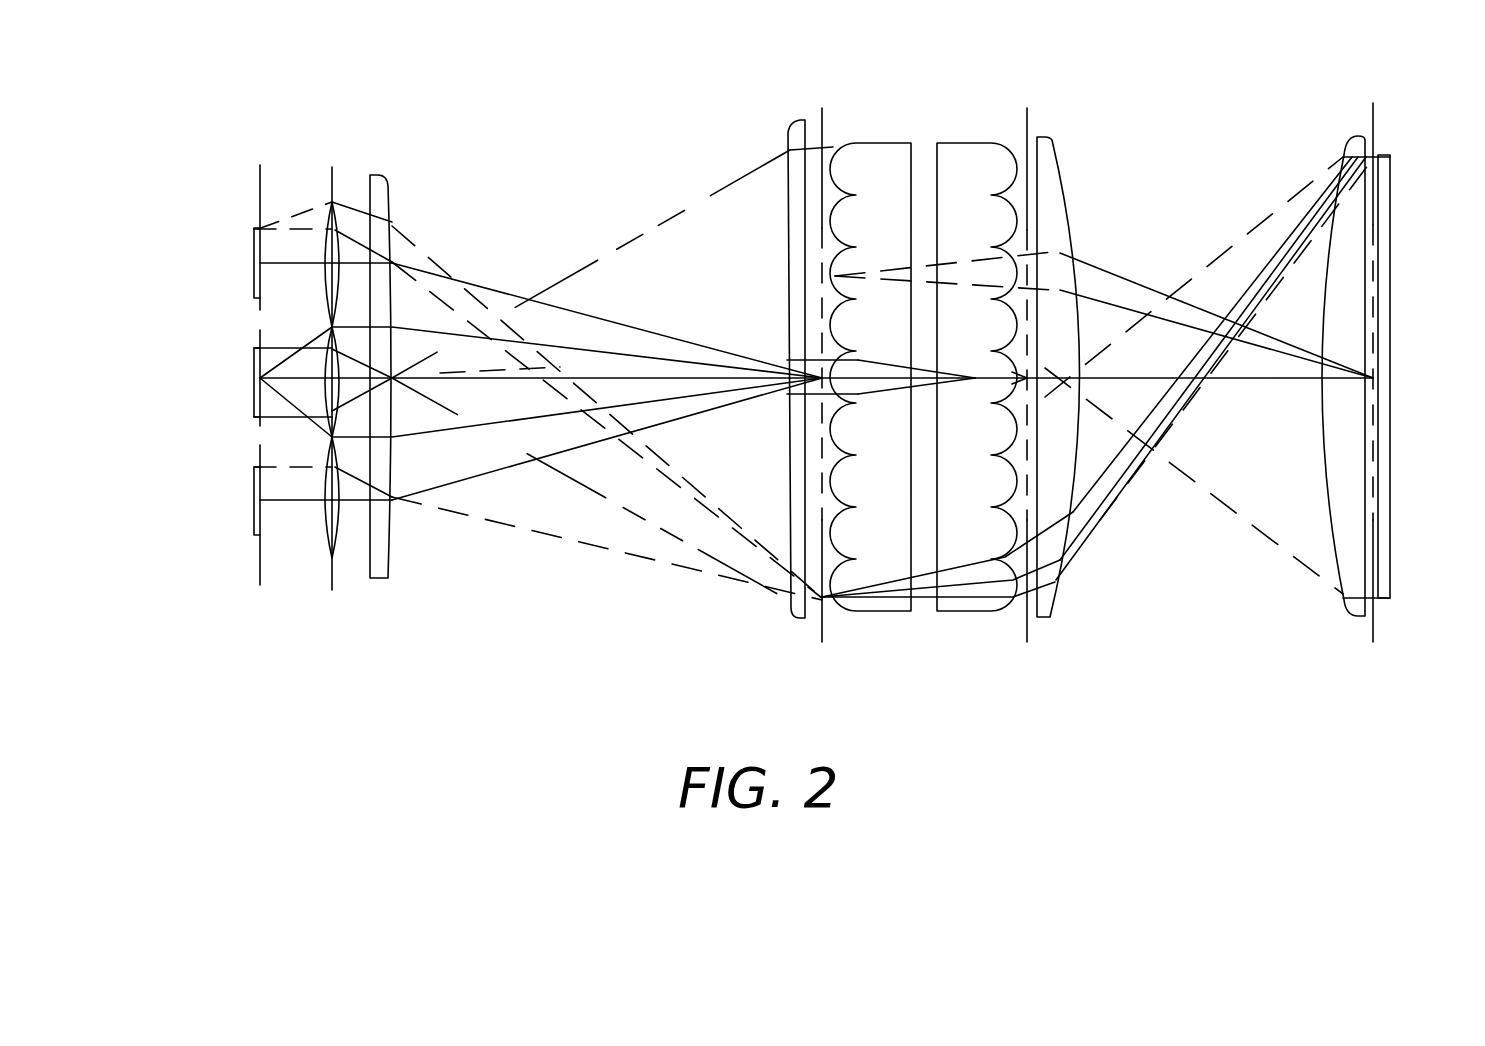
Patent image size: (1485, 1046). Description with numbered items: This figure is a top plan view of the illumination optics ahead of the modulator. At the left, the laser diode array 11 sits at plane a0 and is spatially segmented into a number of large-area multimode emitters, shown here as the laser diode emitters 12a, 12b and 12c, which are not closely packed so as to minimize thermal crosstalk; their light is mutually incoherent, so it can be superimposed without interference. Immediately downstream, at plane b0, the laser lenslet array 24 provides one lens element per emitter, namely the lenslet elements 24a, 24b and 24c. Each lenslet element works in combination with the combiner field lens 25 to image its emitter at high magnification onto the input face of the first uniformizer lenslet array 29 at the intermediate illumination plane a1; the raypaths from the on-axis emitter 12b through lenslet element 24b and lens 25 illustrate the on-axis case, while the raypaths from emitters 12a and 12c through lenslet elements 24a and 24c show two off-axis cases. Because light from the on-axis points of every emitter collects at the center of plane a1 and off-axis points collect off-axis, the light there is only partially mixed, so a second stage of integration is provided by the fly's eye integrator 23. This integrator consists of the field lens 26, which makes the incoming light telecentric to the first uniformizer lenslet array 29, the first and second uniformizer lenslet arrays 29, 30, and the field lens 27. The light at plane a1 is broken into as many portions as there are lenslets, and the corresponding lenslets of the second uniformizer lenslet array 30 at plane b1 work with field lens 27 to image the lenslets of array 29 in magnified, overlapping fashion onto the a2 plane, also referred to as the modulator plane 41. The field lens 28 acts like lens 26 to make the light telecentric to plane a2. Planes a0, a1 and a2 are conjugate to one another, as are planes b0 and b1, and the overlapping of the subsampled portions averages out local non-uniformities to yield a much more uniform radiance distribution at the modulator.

The laser diode array 11 is at (210, 424).
The laser diode emitter 12a is at (256, 231).
The laser diode emitter 12b is at (256, 374).
The laser diode emitter 12c is at (256, 514).
The fly's eye integrator 23 is at (1070, 58).
The laser lenslet array 24 is at (254, 459).
The lenslet element 24a is at (333, 276).
The lenslet element 24b is at (330, 400).
The lenslet element 24c is at (330, 536).
The combiner field lens 25 is at (390, 538).
The field lens 26 is at (803, 608).
The field lens 27 is at (1055, 614).
The field lens 28 is at (1345, 596).
The first uniformizer lenslet array 29 is at (882, 607).
The second uniformizer lenslet array 30 is at (982, 605).
The modulator plane 41 is at (1375, 615).
The plane a0 is at (260, 166).
The plane b0 is at (332, 168).
The intermediate illumination plane a1 is at (822, 134).
The plane b1 is at (1027, 134).
The a2 illumination plane a2 is at (1415, 96).